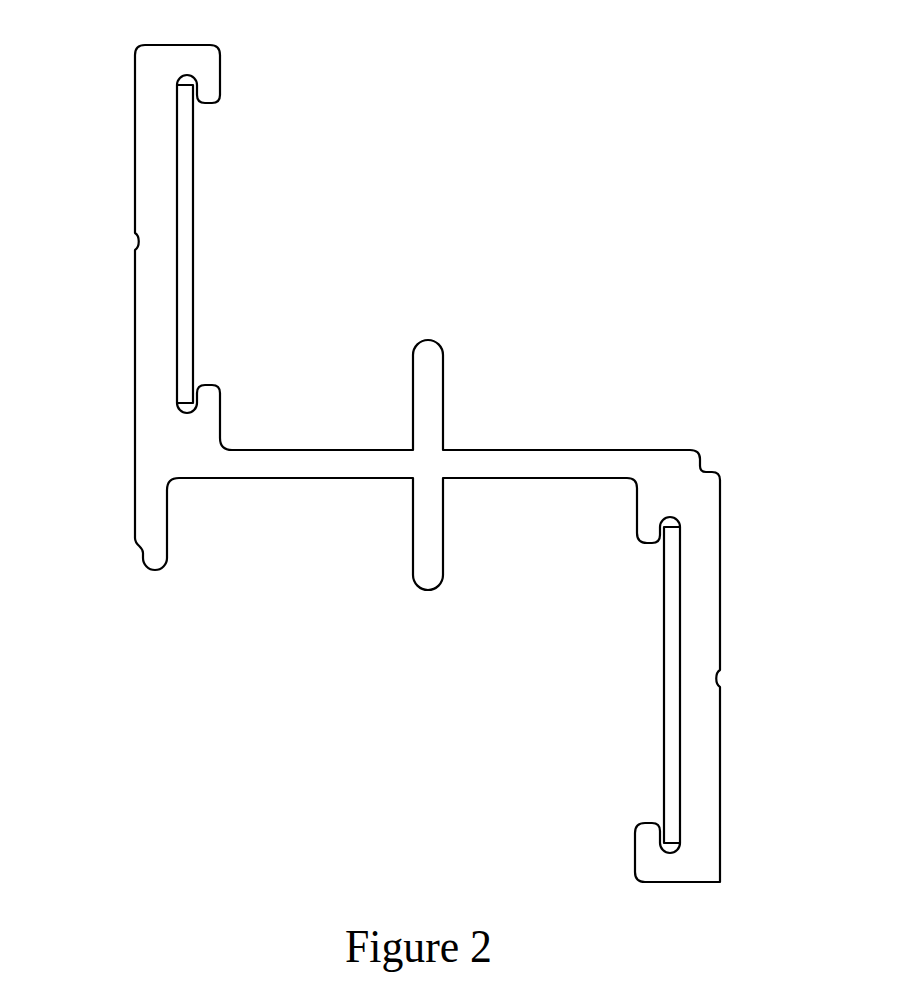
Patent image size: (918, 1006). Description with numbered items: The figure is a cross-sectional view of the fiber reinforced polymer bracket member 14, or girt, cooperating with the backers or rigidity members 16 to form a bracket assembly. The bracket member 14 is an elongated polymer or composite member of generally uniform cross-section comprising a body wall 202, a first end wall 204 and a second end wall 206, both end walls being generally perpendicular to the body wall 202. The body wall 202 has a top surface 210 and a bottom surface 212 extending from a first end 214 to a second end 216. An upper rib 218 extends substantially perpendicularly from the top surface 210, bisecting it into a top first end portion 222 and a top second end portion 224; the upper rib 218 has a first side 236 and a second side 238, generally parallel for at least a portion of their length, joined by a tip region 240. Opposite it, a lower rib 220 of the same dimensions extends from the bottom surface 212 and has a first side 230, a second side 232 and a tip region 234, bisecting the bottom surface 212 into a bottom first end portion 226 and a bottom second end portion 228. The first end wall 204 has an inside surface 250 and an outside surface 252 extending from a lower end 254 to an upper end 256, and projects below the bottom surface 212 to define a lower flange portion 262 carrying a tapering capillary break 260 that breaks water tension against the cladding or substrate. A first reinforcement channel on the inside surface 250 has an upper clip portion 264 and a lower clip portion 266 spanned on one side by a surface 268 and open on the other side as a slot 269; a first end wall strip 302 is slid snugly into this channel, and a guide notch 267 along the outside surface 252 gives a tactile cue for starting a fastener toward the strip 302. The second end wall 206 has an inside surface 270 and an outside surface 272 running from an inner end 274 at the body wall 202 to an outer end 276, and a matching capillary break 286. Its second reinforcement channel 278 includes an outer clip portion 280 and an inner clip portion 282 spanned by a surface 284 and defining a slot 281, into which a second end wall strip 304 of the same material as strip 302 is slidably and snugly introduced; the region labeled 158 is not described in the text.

The fiber reinforced polymer bracket member 14 is at (520, 243).
The rigidity members 16 is at (615, 658).
The flange 158 is at (210, 268).
The body wall 202 is at (633, 445).
The first end wall 204 is at (105, 293).
The second end wall 206 is at (760, 650).
The top surface 210 is at (378, 440).
The bottom surface 212 is at (312, 485).
The first end 214 is at (180, 490).
The second end 216 is at (712, 440).
The upper rib 218 is at (440, 345).
The lower rib 220 is at (425, 600).
The top first end portion 222 is at (322, 415).
The top second end portion 224 is at (573, 408).
The bottom first end portion 226 is at (270, 560).
The bottom second end portion 228 is at (617, 490).
The first side 230 is at (412, 575).
The second side 232 is at (446, 530).
The tip region 234 is at (440, 590).
The first side 236 is at (413, 353).
The second side 238 is at (446, 370).
The tip region 240 is at (415, 333).
The inside surface 250 is at (222, 102).
The outside surface 252 is at (135, 147).
The lower end 254 is at (118, 484).
The upper end 256 is at (118, 80).
The capillary break 260 is at (140, 550).
The lower flange portion 262 is at (105, 533).
The upper clip portion 264 is at (197, 75).
The lower clip portion 266 is at (208, 395).
The guide notch 267 is at (137, 243).
The surface 268 is at (187, 342).
The slot 269 is at (205, 170).
The inside surface 270 is at (663, 712).
The outside surface 272 is at (722, 580).
The inner end 274 is at (738, 470).
The outer end 276 is at (722, 882).
The second reinforcement channel 278 is at (605, 835).
The outer clip portion 280 is at (642, 878).
The slot 281 is at (661, 615).
The inner clip portion 282 is at (634, 546).
The surface 284 is at (680, 745).
The capillary break 286 is at (712, 452).
The first end wall strip 302 is at (190, 218).
The second end wall strip 304 is at (665, 770).